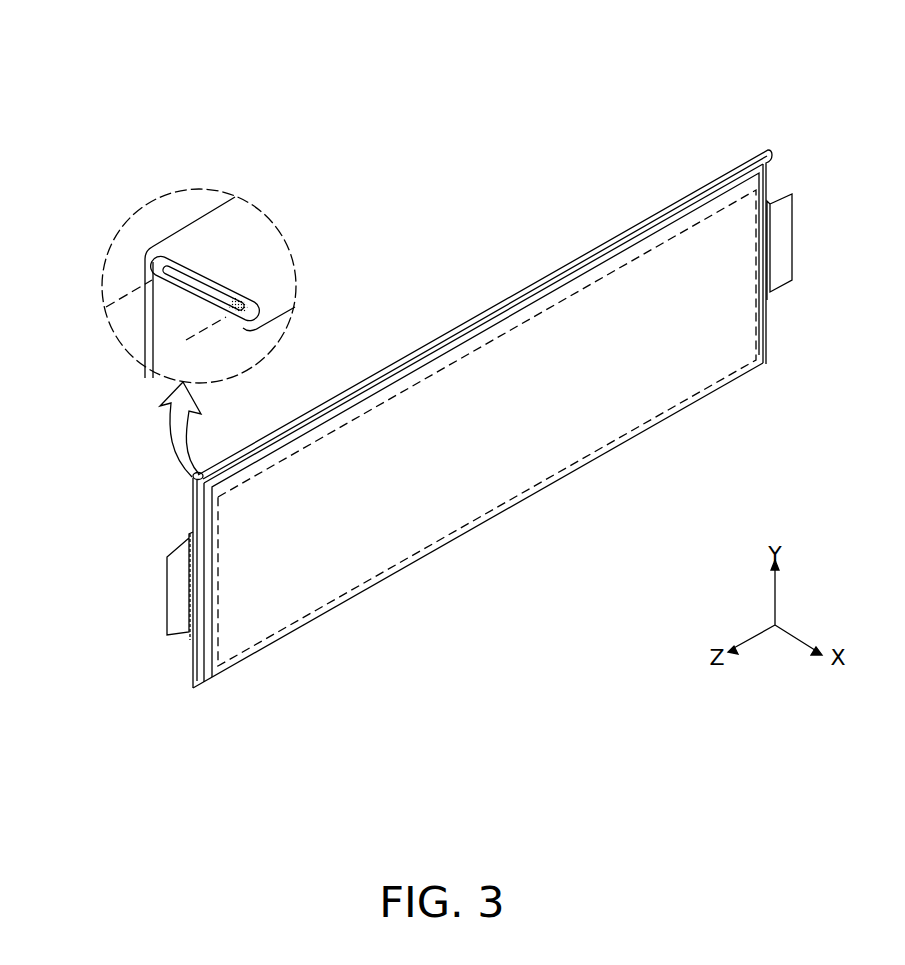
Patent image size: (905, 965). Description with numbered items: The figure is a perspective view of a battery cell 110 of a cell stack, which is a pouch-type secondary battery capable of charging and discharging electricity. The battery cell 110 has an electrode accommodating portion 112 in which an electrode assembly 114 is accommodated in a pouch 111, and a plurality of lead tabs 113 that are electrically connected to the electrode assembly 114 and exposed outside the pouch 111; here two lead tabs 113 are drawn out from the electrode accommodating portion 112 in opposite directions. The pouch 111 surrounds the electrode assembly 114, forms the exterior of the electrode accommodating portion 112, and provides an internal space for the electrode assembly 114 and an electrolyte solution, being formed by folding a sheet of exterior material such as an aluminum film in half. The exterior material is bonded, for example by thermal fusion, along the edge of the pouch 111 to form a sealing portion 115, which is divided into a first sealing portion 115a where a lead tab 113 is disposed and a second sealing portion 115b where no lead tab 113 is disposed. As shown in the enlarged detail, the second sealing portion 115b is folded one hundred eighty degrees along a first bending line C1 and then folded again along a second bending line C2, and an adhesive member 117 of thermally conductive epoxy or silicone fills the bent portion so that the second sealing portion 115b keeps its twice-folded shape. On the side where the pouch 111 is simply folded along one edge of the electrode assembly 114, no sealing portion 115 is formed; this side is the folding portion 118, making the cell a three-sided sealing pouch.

The battery cell 110 is at (360, 44).
The pouch 111 is at (404, 545).
The electrode accommodating portion 112 is at (612, 292).
The lead tab 113 is at (778, 272).
The electrode assembly 114 is at (684, 399).
The sealing portion 115 is at (663, 87).
The first sealing portion 115a is at (765, 160).
The second sealing portion 115b is at (705, 183).
The adhesive member 117 is at (246, 330).
The folding portion 118 is at (495, 519).
The first bending line C1 is at (124, 286).
The second bending line C2 is at (186, 339).